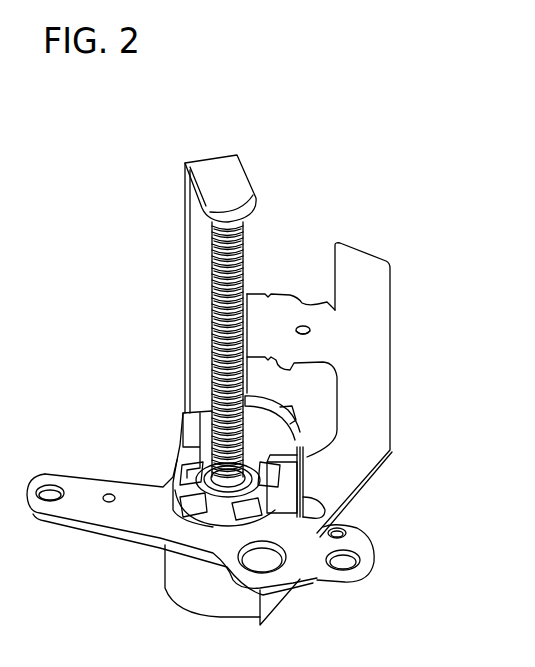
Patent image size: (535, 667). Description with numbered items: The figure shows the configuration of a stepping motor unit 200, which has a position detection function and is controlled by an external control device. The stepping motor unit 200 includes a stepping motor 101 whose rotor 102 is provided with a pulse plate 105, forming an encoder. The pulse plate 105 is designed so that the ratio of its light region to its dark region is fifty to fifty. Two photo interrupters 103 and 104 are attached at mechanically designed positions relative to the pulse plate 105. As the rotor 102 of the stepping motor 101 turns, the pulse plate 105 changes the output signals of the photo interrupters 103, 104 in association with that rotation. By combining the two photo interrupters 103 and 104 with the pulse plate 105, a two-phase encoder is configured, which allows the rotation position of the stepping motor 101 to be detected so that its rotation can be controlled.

The stepping motor unit 200 is at (82, 234).
The stepping motor 101 is at (177, 568).
The rotor 102 is at (215, 306).
The photo interrupter 103 is at (273, 473).
The photo interrupter 104 is at (256, 445).
The pulse plate 105 is at (182, 472).